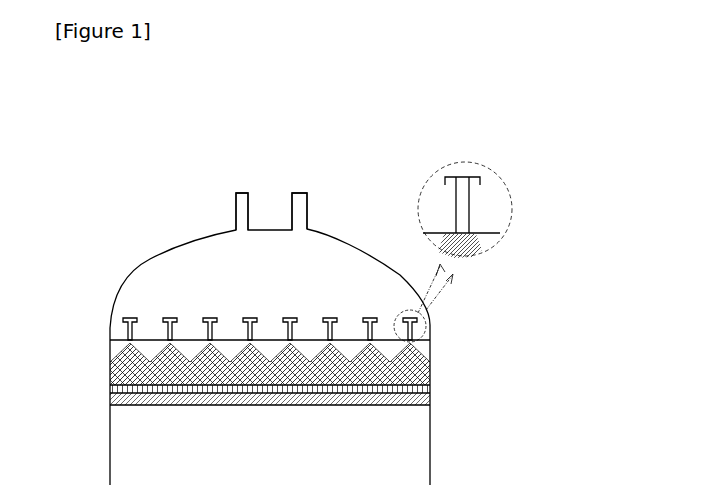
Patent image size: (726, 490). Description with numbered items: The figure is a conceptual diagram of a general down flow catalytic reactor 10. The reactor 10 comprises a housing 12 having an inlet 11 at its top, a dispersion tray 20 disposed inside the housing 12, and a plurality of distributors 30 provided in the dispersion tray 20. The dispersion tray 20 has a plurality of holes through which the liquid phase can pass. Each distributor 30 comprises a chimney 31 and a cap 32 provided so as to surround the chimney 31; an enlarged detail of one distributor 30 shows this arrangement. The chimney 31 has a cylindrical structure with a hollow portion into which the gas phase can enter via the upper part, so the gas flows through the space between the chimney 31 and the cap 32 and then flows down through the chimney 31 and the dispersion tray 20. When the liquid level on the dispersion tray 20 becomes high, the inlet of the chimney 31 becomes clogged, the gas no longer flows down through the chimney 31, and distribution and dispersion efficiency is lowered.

The down flow catalytic reactor 10 is at (357, 138).
The inlet 11 is at (268, 232).
The housing 12 is at (150, 259).
The dispersion tray 20 is at (118, 340).
The distributor 30 is at (370, 308).
The chimney 31 is at (456, 224).
The cap 32 is at (461, 177).